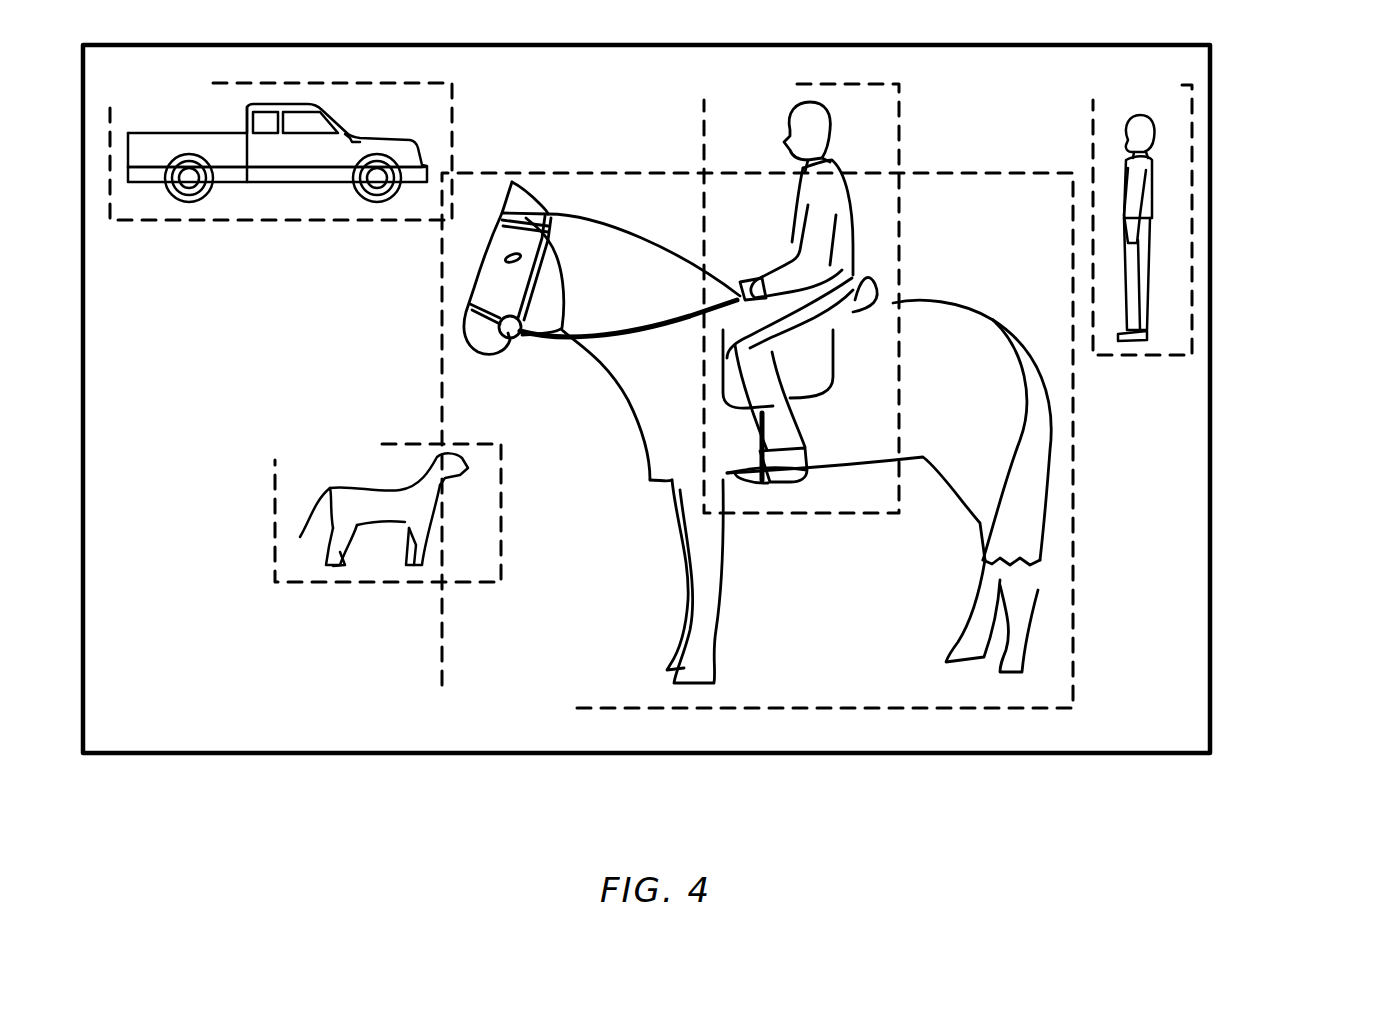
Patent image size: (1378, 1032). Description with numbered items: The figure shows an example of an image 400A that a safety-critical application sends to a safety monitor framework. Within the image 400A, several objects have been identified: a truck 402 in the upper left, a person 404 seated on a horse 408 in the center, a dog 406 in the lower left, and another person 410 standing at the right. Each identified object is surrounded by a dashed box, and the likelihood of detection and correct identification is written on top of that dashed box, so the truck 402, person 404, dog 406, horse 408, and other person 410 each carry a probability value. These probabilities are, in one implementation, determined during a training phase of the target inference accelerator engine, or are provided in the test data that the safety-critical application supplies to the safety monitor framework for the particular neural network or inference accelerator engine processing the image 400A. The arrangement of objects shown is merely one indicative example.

The image 400A is at (1296, 855).
The truck 402 is at (452, 123).
The person 404 is at (899, 128).
The dog 406 is at (501, 513).
The horse 408 is at (1073, 550).
The another person 410 is at (1093, 130).